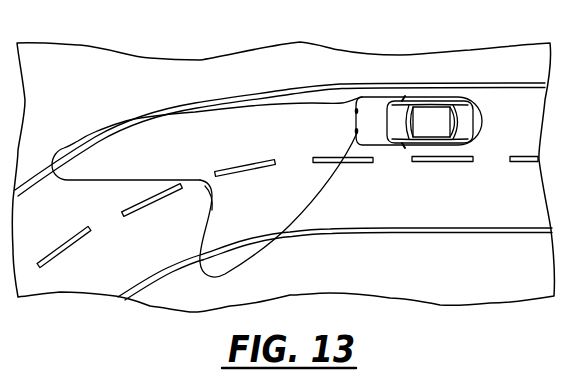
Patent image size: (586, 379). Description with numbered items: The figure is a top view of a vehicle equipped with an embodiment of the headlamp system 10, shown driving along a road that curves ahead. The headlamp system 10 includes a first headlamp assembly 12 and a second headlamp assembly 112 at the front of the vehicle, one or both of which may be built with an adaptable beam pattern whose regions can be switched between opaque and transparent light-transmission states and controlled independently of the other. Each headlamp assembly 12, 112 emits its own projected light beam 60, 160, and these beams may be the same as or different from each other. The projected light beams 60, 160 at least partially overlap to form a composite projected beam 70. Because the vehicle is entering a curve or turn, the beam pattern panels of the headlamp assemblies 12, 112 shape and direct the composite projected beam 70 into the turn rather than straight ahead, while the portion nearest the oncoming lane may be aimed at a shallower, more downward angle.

The headlamp system 10 is at (362, 84).
The second headlamp assembly 112 is at (358, 110).
The first headlamp assembly 12 is at (358, 133).
The projected light beam 160 is at (282, 121).
The projected light beam 60 is at (311, 199).
The composite projected beam 70 is at (233, 196).